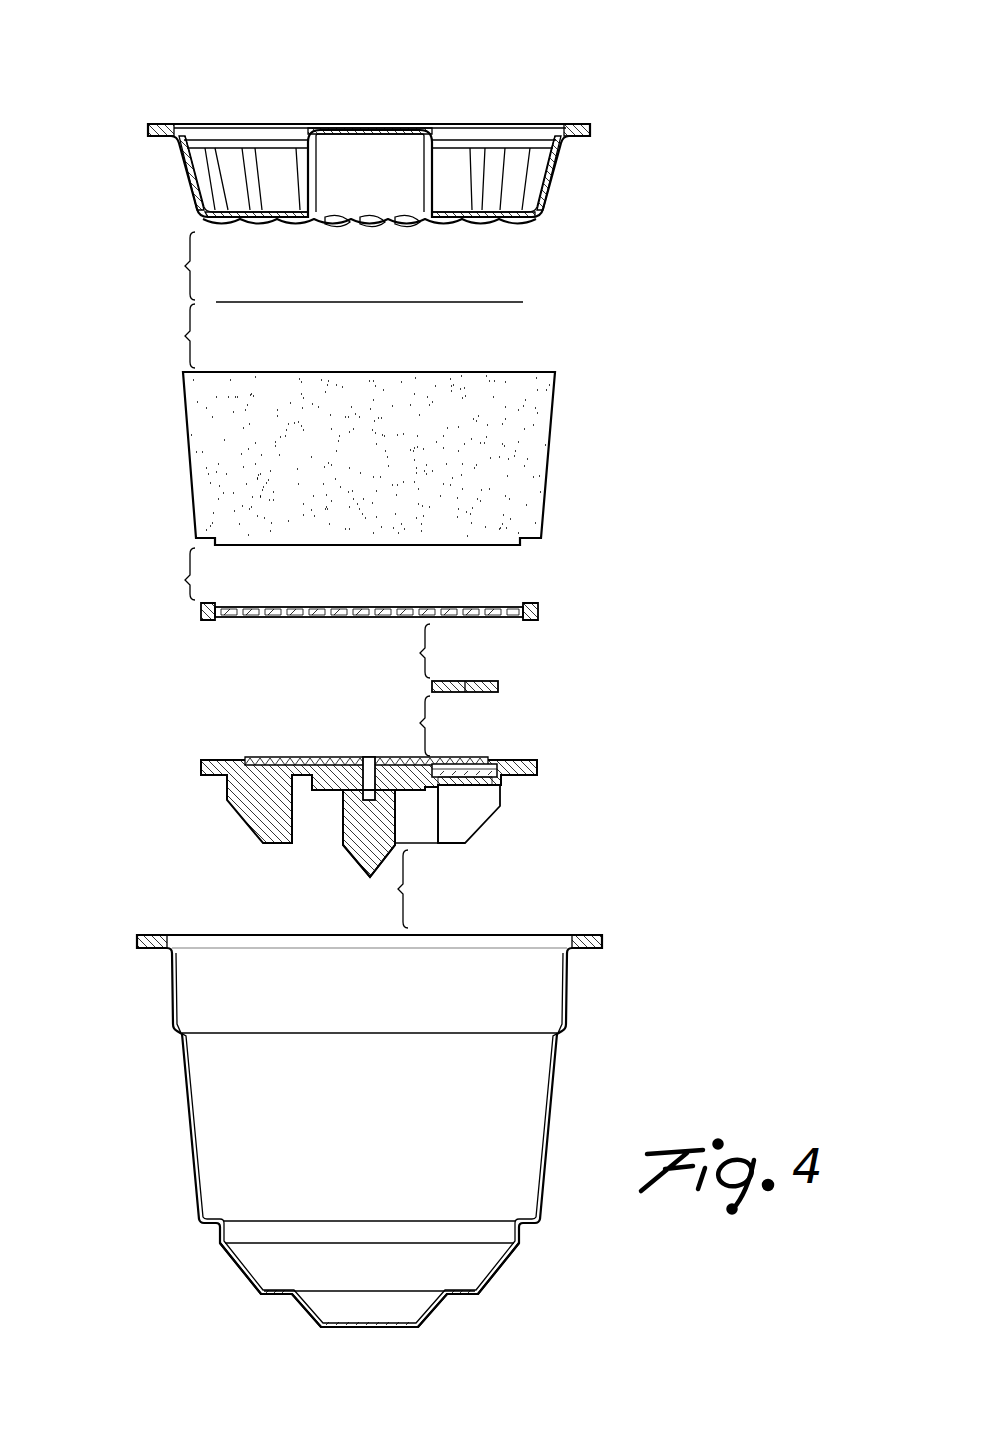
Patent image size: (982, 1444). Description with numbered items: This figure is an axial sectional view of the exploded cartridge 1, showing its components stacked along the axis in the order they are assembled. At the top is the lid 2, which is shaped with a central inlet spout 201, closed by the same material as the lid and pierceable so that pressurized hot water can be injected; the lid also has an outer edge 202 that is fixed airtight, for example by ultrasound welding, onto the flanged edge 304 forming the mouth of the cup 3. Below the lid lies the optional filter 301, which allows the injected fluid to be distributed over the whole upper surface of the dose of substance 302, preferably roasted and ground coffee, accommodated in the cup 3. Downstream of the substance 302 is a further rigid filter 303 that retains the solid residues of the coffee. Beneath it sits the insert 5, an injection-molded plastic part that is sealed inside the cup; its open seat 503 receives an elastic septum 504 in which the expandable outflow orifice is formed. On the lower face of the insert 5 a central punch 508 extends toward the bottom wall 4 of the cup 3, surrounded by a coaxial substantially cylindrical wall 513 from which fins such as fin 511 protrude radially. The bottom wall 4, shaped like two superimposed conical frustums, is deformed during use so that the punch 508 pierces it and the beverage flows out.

The cartridge 1 is at (731, 155).
The lid 2 is at (278, 167).
The inlet spout 201 is at (358, 132).
The edge 202 is at (580, 128).
The cup 3 is at (190, 1118).
The bottom wall 4 is at (503, 1284).
The filter 301 is at (475, 300).
The substance 302 is at (237, 442).
The filter 303 is at (537, 610).
The flanged edge 304 is at (155, 935).
The insert 5 is at (218, 767).
The open seat 503 is at (488, 767).
The septum 504 is at (487, 683).
The punch 508 is at (360, 848).
The fin 511 is at (468, 808).
The substantially cylindrical wall 513 is at (417, 817).